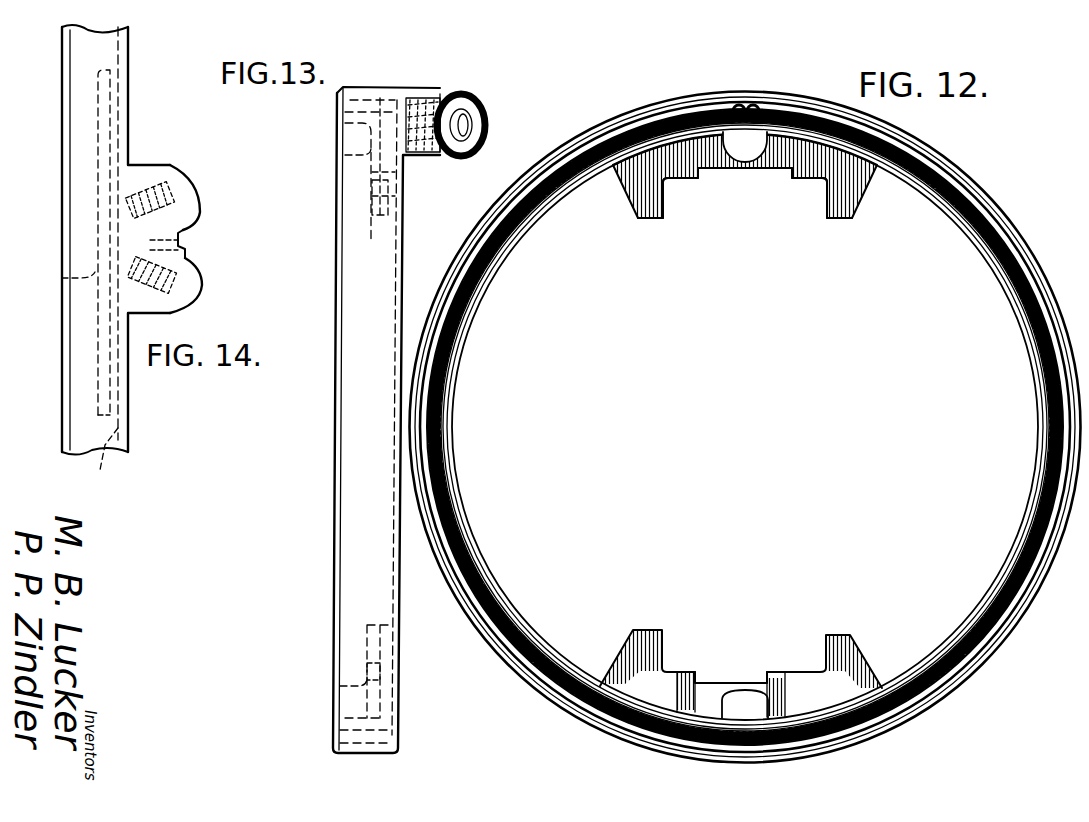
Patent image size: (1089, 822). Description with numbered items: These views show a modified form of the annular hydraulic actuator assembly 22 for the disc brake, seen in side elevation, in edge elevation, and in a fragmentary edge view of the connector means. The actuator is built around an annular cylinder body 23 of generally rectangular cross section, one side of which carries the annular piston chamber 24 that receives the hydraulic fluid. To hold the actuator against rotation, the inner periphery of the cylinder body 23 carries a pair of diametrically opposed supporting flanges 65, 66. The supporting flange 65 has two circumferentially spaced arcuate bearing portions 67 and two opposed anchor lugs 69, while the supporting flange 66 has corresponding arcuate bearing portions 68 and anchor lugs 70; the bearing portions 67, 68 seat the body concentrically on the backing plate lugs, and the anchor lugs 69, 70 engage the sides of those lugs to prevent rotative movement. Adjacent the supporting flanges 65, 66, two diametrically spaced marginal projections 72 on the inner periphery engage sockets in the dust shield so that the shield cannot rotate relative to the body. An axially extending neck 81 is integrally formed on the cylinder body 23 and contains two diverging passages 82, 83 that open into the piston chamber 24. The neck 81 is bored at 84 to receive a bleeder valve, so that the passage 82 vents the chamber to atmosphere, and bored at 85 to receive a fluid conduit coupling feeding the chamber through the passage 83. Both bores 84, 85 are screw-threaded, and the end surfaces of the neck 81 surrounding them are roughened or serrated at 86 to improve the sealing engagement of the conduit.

In FIG. 12, the hydraulic actuator assembly 22 is at (964, 172).
In FIG. 13, the hydraulic actuator assembly 22 is at (335, 240).
In FIG. 14, the hydraulic actuator assembly 22 is at (131, 410).
In FIG. 12, the cylinder body 23 is at (949, 211).
In FIG. 13, the cylinder body 23 is at (404, 259).
In FIG. 14, the cylinder body 23 is at (130, 93).
In FIG. 12, the annular piston chamber 24 is at (976, 198).
In FIG. 13, the annular piston chamber 24 is at (375, 97).
In FIG. 14, the annular piston chamber 24 is at (106, 459).
In FIG. 12, the supporting flange 65 is at (727, 166).
In FIG. 13, the supporting flange 65 is at (366, 184).
In FIG. 14, the supporting flange 65 is at (98, 388).
In FIG. 12, the supporting flange 66 is at (763, 683).
In FIG. 13, the supporting flange 66 is at (394, 628).
In FIG. 12, the arcuate bearing portions 67 is at (688, 179).
In FIG. 13, the arcuate bearing portions 67 is at (401, 172).
In FIG. 12, the arcuate bearing portions 68 is at (686, 674).
In FIG. 13, the arcuate bearing portions 68 is at (401, 668).
In FIG. 12, the anchor lugs 69 is at (657, 220).
In FIG. 13, the anchor lugs 69 is at (401, 196).
In FIG. 12, the anchor lugs 70 is at (650, 630).
In FIG. 13, the anchor lugs 70 is at (399, 642).
In FIG. 12, the marginal projections 72 is at (754, 142).
In FIG. 13, the marginal projections 72 is at (342, 156).
In FIG. 14, the marginal projections 72 is at (62, 278).
In FIG. 12, the neck 81 is at (753, 104).
In FIG. 13, the neck 81 is at (421, 88).
In FIG. 14, the neck 81 is at (176, 316).
In FIG. 12, the passage 82 is at (738, 104).
In FIG. 14, the passage 82 is at (132, 203).
In FIG. 14, the passage 83 is at (188, 240).
In FIG. 14, the bore 84 is at (192, 196).
In FIG. 13, the bore 85 is at (448, 98).
In FIG. 14, the bore 85 is at (203, 290).
In FIG. 13, the roughened or serrated end surfaces 86 is at (488, 108).